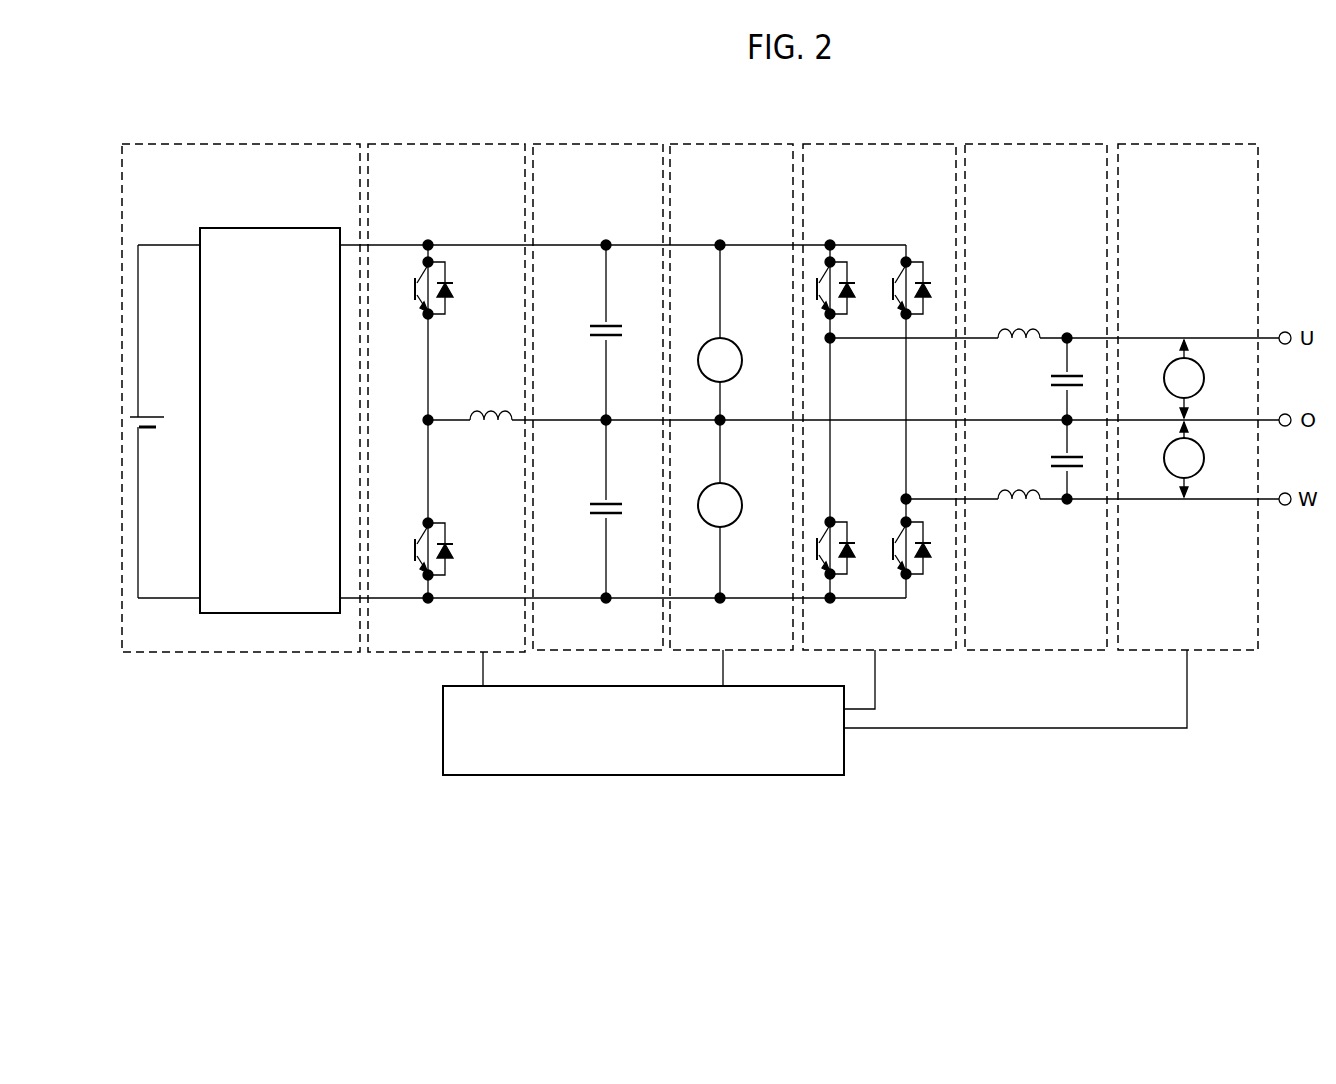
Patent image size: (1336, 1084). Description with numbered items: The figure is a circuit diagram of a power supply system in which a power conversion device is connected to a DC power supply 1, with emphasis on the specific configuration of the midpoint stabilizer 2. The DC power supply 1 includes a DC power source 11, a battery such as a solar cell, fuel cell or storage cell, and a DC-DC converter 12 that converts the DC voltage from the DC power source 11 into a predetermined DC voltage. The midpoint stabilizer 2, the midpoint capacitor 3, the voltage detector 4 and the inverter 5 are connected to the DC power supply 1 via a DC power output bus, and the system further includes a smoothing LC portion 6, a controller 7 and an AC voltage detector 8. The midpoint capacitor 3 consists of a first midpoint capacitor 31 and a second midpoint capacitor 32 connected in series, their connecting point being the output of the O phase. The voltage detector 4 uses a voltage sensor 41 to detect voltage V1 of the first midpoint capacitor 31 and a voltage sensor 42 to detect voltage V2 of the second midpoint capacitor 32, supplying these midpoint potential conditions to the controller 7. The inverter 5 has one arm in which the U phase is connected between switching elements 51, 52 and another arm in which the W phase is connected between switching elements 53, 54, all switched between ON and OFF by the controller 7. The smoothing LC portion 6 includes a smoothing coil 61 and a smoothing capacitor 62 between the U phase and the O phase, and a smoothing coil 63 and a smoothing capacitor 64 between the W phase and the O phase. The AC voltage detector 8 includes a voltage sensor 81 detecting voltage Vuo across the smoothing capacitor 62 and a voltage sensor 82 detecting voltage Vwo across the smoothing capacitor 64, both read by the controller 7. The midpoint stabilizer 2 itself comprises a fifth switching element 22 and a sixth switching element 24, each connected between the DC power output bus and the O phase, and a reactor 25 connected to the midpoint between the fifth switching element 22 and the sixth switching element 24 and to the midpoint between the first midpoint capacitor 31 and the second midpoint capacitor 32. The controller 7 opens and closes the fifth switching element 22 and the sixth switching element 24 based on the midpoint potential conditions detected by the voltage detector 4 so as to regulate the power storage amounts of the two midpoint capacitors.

The DC power supply 1 is at (241, 377).
The midpoint stabilizer 2 is at (446, 377).
The midpoint capacitor 3 is at (603, 376).
The voltage detector 4 is at (734, 376).
The inverter 5 is at (879, 376).
The smoothing LC portion 6 is at (1036, 376).
The controller 7 is at (844, 752).
The AC voltage detector 8 is at (1191, 376).
The DC power source 11 is at (152, 428).
The DC-DC converter 12 is at (199, 343).
The fifth switching element 22 is at (448, 316).
The sixth switching element 24 is at (419, 536).
The reactor 25 is at (496, 411).
The first midpoint capacitor 31 is at (612, 336).
The second midpoint capacitor 32 is at (612, 514).
The voltage sensor 41 is at (741, 350).
The voltage sensor 42 is at (741, 495).
The first switching element 51 is at (849, 313).
The second switching element 52 is at (849, 573).
The third switching element 53 is at (925, 272).
The fourth switching element 54 is at (912, 576).
The smoothing coil 61 is at (1036, 326).
The smoothing capacitor 62 is at (1054, 385).
The smoothing coil 63 is at (1030, 500).
The smoothing capacitor 64 is at (1054, 452).
The voltage sensor 81 is at (1205, 372).
The voltage sensor 82 is at (1205, 464).